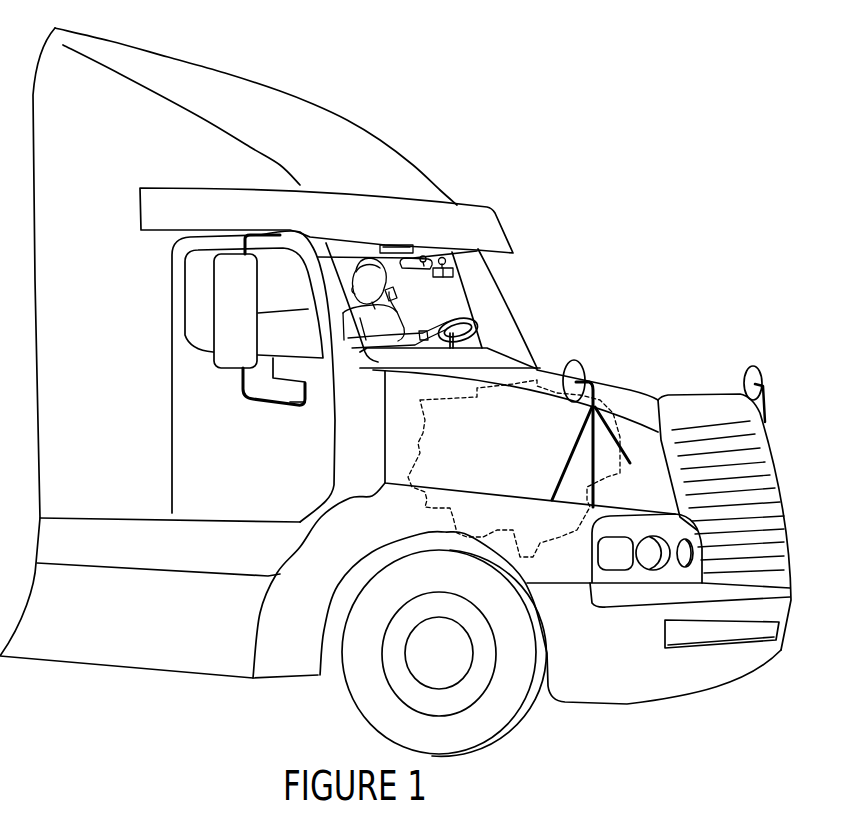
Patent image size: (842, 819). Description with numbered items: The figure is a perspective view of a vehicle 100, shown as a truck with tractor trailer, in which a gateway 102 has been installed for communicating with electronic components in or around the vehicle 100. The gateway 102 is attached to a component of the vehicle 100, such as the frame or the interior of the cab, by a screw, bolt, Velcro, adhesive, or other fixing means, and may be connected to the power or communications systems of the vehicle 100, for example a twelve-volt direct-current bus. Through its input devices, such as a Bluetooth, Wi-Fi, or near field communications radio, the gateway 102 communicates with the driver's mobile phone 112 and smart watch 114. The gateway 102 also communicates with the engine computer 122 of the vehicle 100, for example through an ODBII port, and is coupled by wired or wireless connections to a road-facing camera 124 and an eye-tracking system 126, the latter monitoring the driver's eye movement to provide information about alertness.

The vehicle 100 is at (293, 88).
The gateway 102 is at (407, 244).
The mobile phone 112 is at (394, 289).
The smart watch 114 is at (424, 334).
The engine computer 122 is at (546, 370).
The road-facing camera 124 is at (453, 270).
The eye-tracking system 126 is at (420, 260).